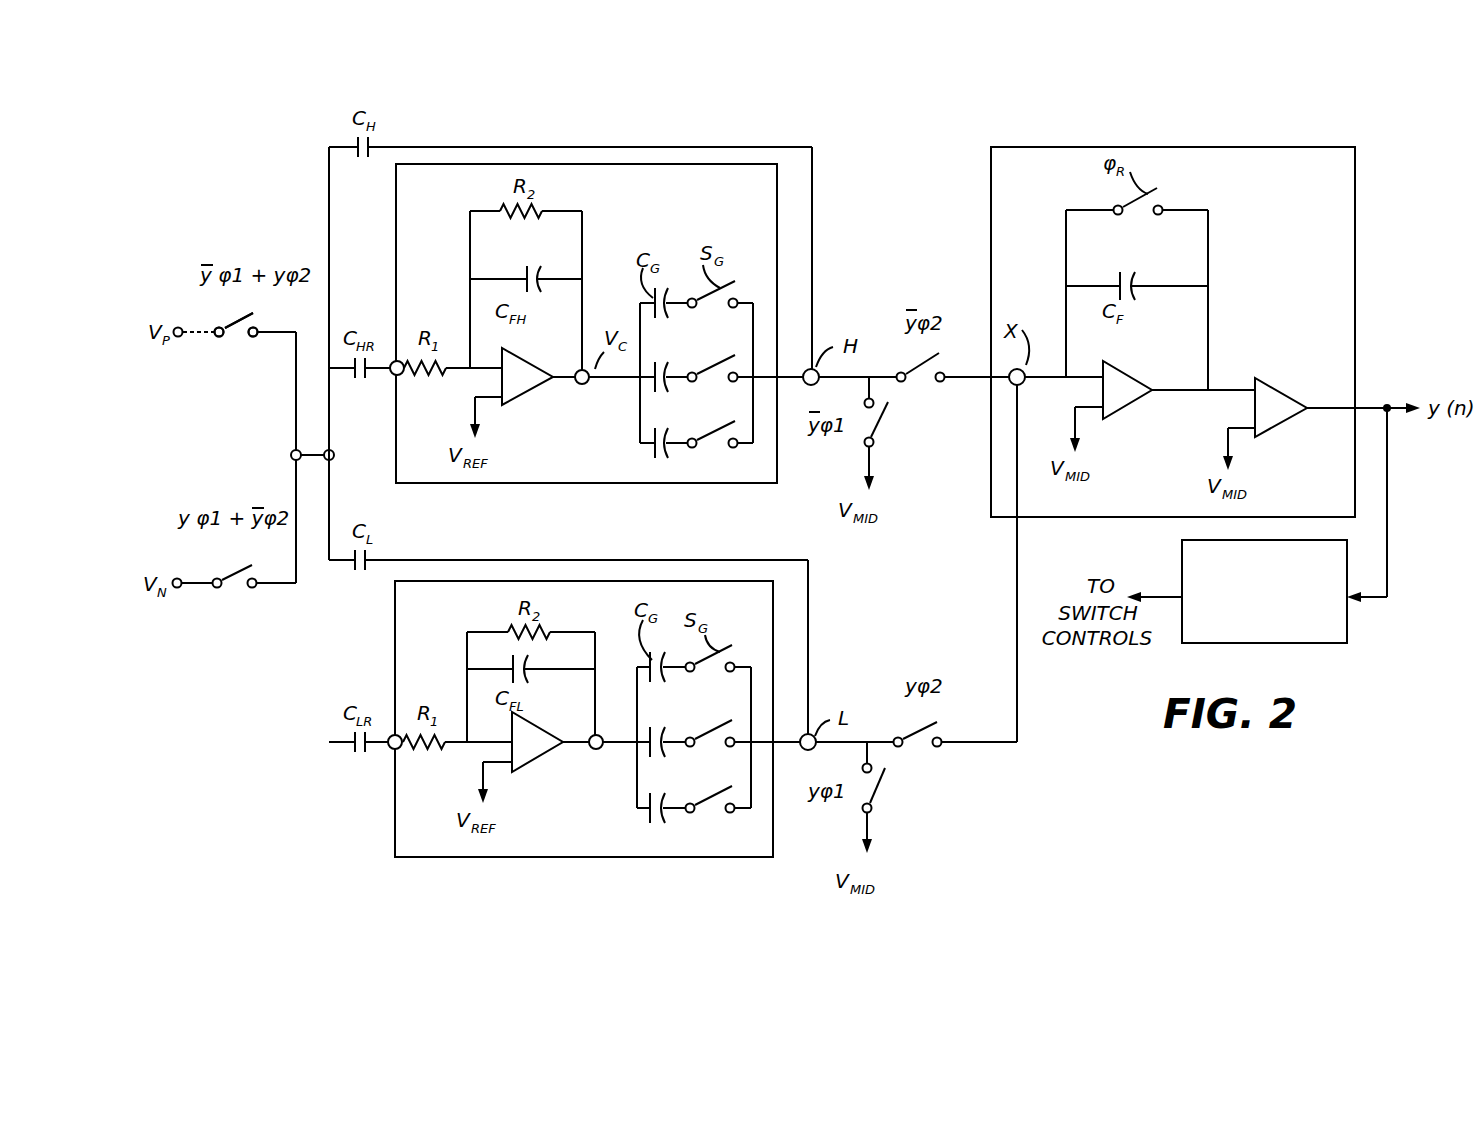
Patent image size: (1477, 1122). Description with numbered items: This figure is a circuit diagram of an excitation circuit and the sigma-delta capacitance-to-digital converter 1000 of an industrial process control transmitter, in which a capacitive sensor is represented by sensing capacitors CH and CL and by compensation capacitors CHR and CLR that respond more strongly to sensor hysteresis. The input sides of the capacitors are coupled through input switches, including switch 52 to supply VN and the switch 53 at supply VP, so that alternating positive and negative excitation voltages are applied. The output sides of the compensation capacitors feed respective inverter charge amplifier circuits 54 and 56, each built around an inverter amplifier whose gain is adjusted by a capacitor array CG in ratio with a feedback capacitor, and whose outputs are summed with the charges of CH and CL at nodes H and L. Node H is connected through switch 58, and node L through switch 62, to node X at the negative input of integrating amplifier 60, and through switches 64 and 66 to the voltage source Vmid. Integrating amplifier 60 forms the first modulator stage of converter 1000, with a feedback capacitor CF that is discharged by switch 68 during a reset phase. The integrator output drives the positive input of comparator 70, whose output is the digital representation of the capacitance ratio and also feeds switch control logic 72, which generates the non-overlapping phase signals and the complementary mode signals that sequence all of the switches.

The switch 52 is at (228, 590).
The positive input switch 53 is at (240, 322).
The inverter charge amplifier circuit 54 is at (397, 421).
The inverter charge amplifier circuit 56 is at (395, 853).
The switch 58 is at (912, 378).
The integrating amplifier 60 is at (1128, 371).
The switch 62 is at (912, 744).
The switch 64 is at (881, 424).
The switch 66 is at (878, 788).
The switch 68 is at (1132, 216).
The comparator 70 is at (1273, 387).
The switch control logic 72 is at (1305, 644).
The sigma-delta capacitance-to-digital converter 1000 is at (1355, 329).